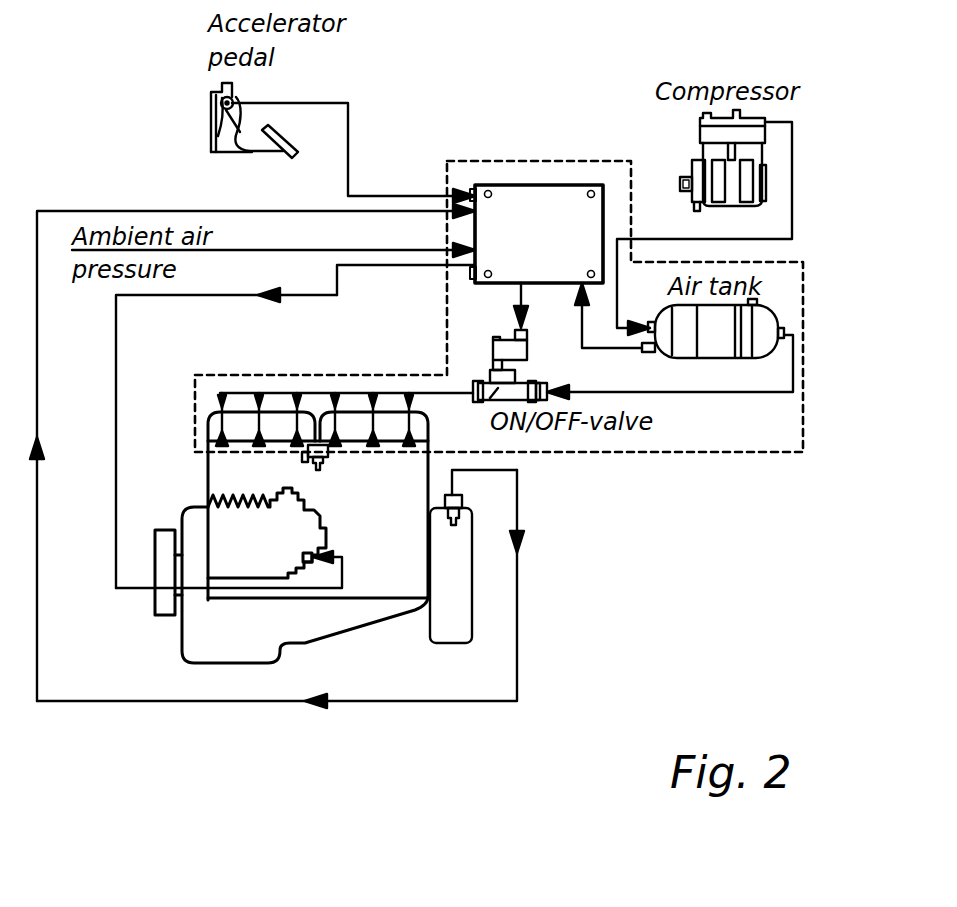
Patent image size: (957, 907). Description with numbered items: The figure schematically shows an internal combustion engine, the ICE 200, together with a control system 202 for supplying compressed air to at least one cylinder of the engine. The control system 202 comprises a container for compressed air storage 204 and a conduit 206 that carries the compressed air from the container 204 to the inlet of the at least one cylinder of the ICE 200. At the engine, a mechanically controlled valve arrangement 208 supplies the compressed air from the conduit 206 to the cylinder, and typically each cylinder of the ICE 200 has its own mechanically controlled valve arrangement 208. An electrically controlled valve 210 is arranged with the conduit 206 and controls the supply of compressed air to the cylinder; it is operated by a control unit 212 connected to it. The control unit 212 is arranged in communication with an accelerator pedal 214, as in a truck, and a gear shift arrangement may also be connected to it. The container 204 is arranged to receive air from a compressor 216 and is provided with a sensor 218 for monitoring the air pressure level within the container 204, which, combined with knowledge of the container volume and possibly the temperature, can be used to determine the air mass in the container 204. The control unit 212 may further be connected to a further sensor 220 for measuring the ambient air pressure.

The ICE 200 is at (372, 486).
The control system 202 is at (804, 412).
The container for compressed air storage 204 is at (765, 322).
The conduit 206 is at (703, 393).
The mechanically controlled valve arrangement 208 is at (227, 423).
The electrically controlled valve 210 is at (495, 390).
The control unit 212 is at (548, 185).
The accelerator pedal 214 is at (211, 120).
The compressor 216 is at (700, 140).
The sensor 218 is at (648, 352).
The further sensor 220 is at (242, 250).